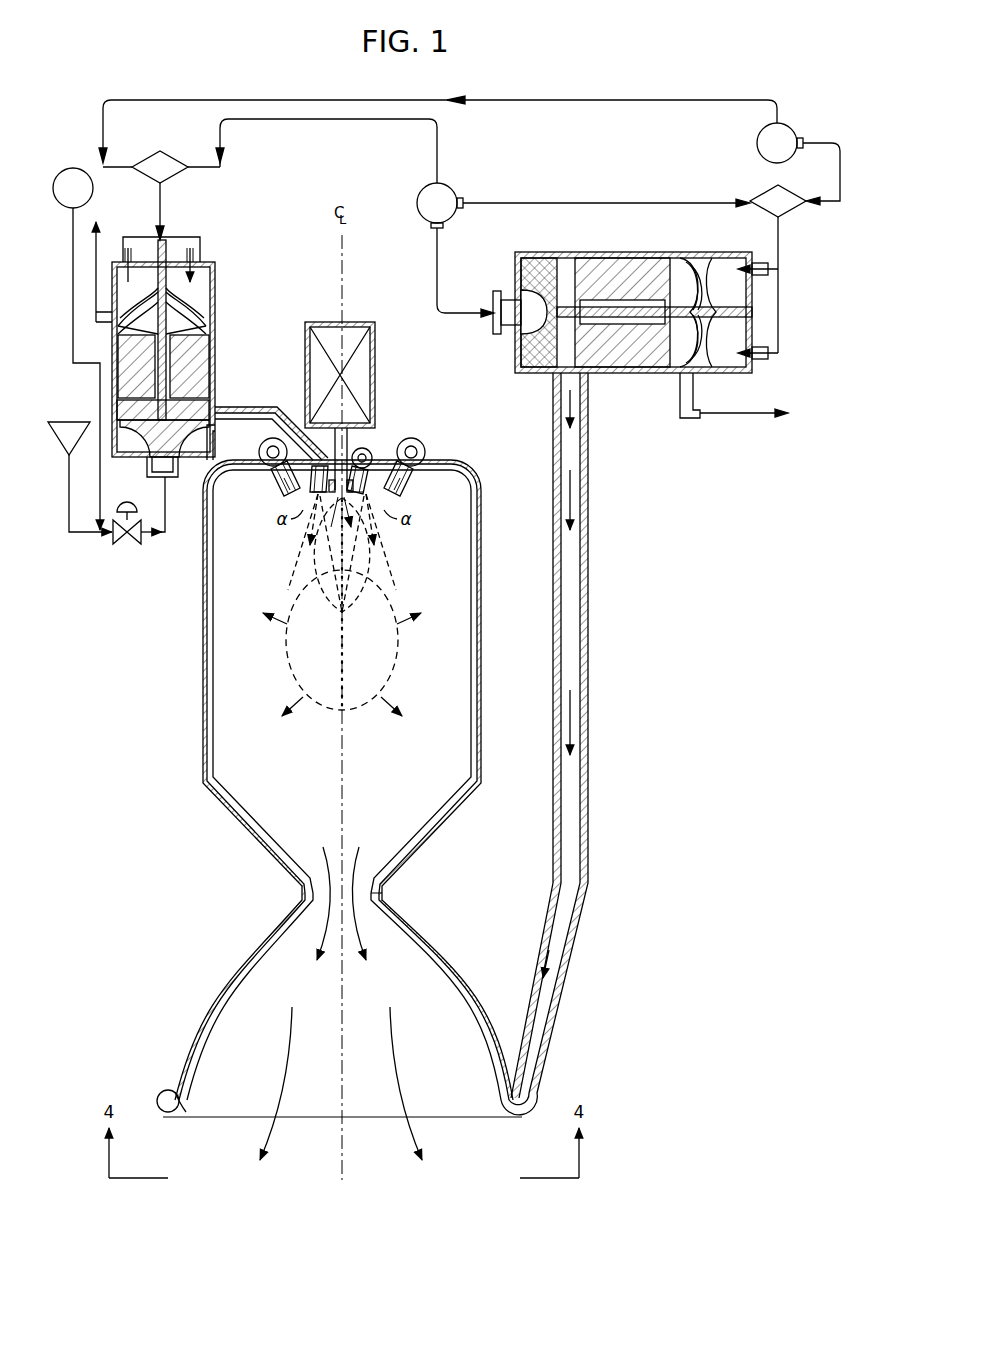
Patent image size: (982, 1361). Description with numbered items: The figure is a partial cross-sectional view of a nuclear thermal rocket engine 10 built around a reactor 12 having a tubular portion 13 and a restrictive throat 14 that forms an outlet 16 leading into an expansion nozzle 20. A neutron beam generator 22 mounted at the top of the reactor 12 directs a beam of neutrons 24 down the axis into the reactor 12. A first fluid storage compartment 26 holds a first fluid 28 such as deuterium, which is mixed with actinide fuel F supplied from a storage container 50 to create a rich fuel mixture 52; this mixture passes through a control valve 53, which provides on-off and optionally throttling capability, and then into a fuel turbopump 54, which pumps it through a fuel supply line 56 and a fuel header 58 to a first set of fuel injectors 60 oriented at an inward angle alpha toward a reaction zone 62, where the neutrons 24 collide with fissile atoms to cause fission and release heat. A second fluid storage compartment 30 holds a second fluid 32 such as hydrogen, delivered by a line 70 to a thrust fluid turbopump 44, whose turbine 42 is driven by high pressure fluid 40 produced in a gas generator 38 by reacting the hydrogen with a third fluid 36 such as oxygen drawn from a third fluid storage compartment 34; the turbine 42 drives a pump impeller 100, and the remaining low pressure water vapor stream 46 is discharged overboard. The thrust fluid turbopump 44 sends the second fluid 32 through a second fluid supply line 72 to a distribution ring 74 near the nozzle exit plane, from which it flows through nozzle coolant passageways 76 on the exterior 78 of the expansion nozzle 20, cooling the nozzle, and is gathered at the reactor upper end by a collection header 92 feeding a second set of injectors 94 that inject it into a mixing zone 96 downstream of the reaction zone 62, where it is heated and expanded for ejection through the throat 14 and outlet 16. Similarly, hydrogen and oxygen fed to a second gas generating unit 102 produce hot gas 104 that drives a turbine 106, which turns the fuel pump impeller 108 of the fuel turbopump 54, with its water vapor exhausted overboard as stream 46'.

The nuclear thermal rocket engine 10 is at (655, 680).
The reactor 12 is at (214, 590).
The tubular portion 13 is at (480, 592).
The restrictive throat 14 is at (384, 889).
The outlet 16 is at (384, 898).
The expansion nozzle 20 is at (246, 968).
The neutron beam generator 22 is at (376, 352).
The beam of neutrons 24 is at (342, 556).
The first fluid storage compartment 26 is at (76, 168).
The first fluid 28 is at (74, 208).
The second fluid storage compartment 30 is at (452, 190).
The second fluid 32 is at (452, 216).
The third fluid storage compartment 34 is at (790, 126).
The third fluid 36 is at (764, 158).
The gas generator 38 is at (790, 192).
The high pressure fluid 40 is at (781, 250).
The turbine 42 is at (664, 256).
The thrust fluid turbopump 44 is at (648, 378).
The low pressure water vapor stream 46 is at (734, 415).
The water vapor stream 46' is at (122, 266).
The storage container 50 is at (68, 422).
The rich fuel mixture 52 is at (104, 534).
The control valve 53 is at (138, 512).
The fuel turbopump 54 is at (216, 272).
The fuel supply line 56 is at (256, 404).
The fuel header 58 is at (352, 440).
The first set of fuel injectors 60 is at (316, 494).
The reaction zone 62 is at (318, 528).
The line 70 is at (435, 262).
The second fluid supply line 72 is at (591, 582).
The distribution ring 74 is at (164, 1090).
The nozzle coolant passageways 76 is at (206, 1004).
The exterior 78 is at (268, 946).
The collection header 92 is at (259, 448).
The second set of injectors 94 is at (282, 480).
The mixing zone 96 is at (394, 660).
The pump impeller 100 is at (524, 276).
The second gas generating unit 102 is at (160, 151).
The hot gas 104 is at (160, 195).
The turbine 106 is at (211, 322).
The fuel pump impeller 108 is at (148, 460).